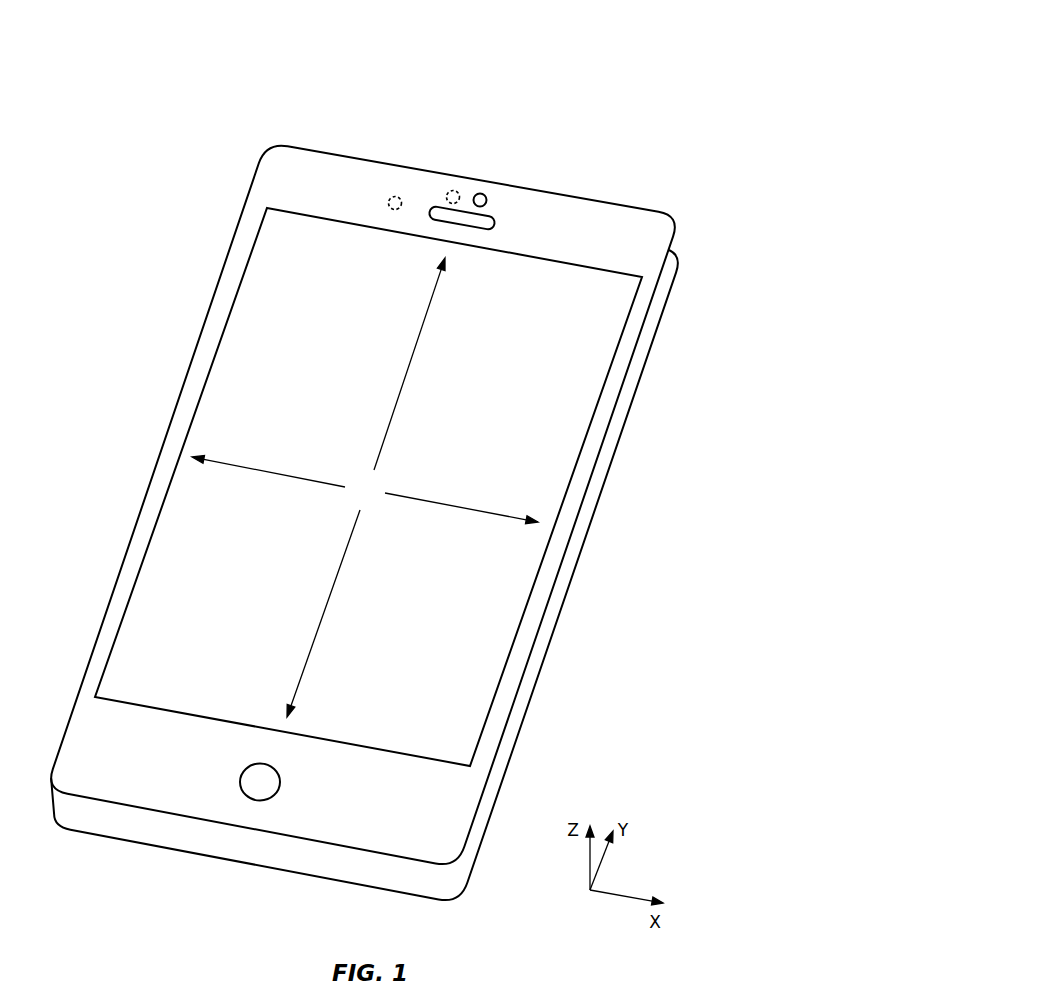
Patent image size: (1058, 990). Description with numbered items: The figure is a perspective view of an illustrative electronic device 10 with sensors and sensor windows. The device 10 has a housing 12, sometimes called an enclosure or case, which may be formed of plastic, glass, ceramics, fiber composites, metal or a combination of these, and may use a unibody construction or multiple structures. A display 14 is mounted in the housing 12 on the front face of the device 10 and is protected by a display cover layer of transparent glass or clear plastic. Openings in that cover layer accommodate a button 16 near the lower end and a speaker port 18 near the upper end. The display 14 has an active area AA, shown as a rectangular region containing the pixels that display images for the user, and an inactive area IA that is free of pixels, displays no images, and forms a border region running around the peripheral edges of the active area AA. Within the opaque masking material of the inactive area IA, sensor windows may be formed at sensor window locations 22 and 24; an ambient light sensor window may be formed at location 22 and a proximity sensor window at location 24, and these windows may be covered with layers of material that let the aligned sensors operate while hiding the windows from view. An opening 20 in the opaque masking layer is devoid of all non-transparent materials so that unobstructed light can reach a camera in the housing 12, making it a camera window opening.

The electronic device 10 is at (718, 92).
The housing 12 is at (645, 365).
The display 14 is at (555, 327).
The button 16 is at (258, 802).
The speaker port 18 is at (495, 223).
The opening 20 is at (480, 192).
The sensor window location 22 is at (452, 190).
The sensor window location 24 is at (395, 196).
The active area AA is at (365, 487).
The inactive area IA is at (600, 222).